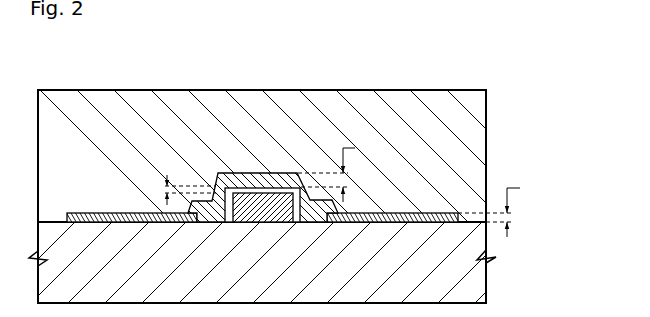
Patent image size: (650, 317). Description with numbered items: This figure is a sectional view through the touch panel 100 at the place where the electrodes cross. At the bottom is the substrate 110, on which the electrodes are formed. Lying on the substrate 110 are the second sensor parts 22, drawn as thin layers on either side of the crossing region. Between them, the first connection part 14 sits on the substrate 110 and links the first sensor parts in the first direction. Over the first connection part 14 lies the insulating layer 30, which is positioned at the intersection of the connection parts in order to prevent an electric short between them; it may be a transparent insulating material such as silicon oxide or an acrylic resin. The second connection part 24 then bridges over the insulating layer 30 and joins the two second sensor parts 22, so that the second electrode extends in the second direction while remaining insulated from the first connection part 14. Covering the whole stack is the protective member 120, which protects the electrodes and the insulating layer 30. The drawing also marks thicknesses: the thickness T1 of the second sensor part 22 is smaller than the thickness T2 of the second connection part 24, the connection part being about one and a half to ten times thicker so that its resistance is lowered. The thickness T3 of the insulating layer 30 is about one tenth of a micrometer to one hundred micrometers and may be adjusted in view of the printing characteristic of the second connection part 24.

The touch panel 100 is at (491, 49).
The substrate 110 is at (486, 275).
The protective member 120 is at (486, 146).
The second sensor part 22 is at (100, 213).
The second connection part 24 is at (232, 173).
The insulating layer 30 is at (262, 189).
The first connection part 14 is at (280, 201).
The thickness of second sensor part T1 is at (502, 207).
The thickness of second connection part T2 is at (341, 171).
The thickness of insulating layer T3 is at (179, 190).